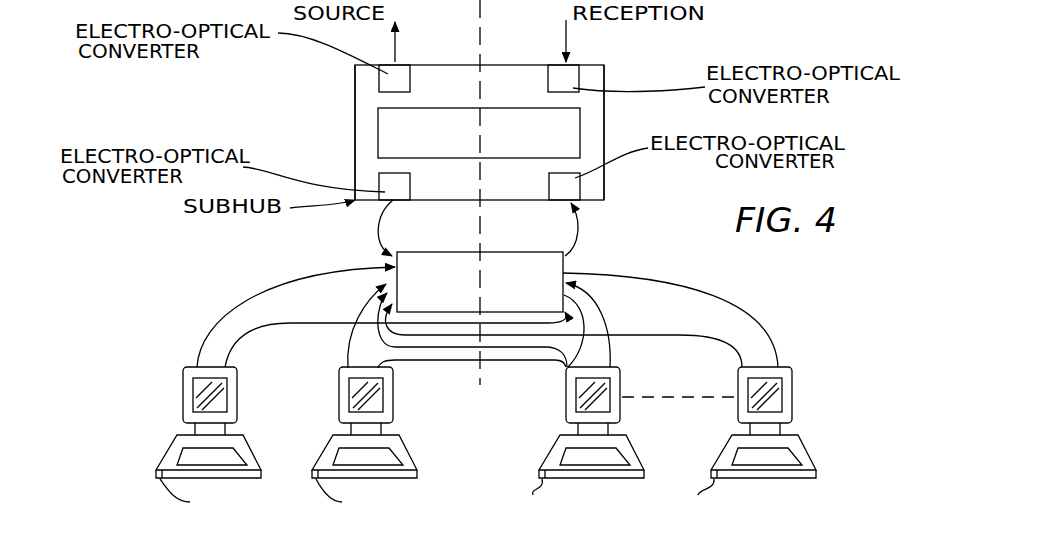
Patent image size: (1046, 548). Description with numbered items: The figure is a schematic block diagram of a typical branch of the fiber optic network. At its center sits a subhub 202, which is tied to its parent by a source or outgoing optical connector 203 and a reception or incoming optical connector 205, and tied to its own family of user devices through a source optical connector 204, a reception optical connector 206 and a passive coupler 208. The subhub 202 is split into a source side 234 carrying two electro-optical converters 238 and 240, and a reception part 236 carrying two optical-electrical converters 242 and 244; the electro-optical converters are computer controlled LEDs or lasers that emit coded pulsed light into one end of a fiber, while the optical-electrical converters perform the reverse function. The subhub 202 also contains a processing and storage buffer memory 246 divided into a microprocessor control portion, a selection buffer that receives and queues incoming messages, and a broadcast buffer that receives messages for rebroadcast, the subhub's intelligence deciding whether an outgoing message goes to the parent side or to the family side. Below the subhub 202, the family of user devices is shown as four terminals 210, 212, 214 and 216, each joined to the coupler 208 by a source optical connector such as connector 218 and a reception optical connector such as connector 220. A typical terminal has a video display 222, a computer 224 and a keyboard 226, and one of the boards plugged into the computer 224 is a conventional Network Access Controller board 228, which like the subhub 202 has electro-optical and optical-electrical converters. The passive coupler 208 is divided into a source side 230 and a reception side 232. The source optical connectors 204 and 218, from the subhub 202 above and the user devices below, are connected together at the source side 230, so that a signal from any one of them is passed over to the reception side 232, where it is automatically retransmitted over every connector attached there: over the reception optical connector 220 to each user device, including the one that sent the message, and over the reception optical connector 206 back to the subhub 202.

The subhub 202 is at (493, 136).
The source optical connector 203 is at (562, 37).
The source optical connector 204 is at (378, 221).
The reception optical connector 205 is at (397, 47).
The reception optical connector 206 is at (587, 226).
The passive coupler 208 is at (550, 246).
The terminal 210 is at (197, 441).
The terminal 212 is at (393, 395).
The terminal 214 is at (622, 373).
The terminal 216 is at (795, 393).
The source optical connector 218 is at (240, 302).
The reception optical connector 220 is at (342, 323).
The video display 222 is at (195, 390).
The computer 224 is at (259, 479).
The keyboard 226 is at (233, 458).
The Network Access Controller board 228 is at (172, 456).
The source side 230 is at (425, 252).
The reception side 232 is at (514, 252).
The source side 234 is at (355, 102).
The reception part 236 is at (604, 112).
The electro-optical converter 238 is at (355, 73).
The electro-optical converter 240 is at (385, 183).
The optical-electrical converter 242 is at (573, 82).
The optical-electrical converter 244 is at (575, 183).
The processing and storage buffer memory 246 is at (355, 132).